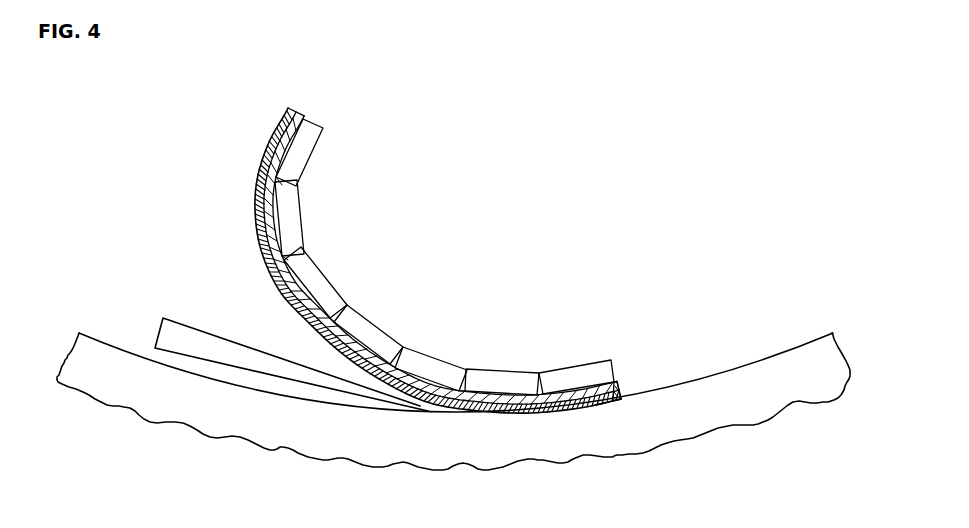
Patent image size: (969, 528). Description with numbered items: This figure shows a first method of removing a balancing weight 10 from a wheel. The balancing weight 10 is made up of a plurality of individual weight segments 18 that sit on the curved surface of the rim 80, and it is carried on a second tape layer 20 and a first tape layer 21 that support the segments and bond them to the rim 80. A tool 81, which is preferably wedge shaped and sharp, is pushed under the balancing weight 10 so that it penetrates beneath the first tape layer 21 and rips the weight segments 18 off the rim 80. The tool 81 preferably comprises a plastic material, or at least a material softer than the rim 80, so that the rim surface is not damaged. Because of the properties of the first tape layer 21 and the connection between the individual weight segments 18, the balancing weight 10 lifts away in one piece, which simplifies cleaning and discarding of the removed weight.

The balancing weight 10 is at (438, 318).
The weight segments 18 is at (505, 380).
The second tape layer 20 is at (618, 385).
The first tape layer 21 is at (619, 401).
The rim 80 is at (165, 403).
The tool 81 is at (197, 342).